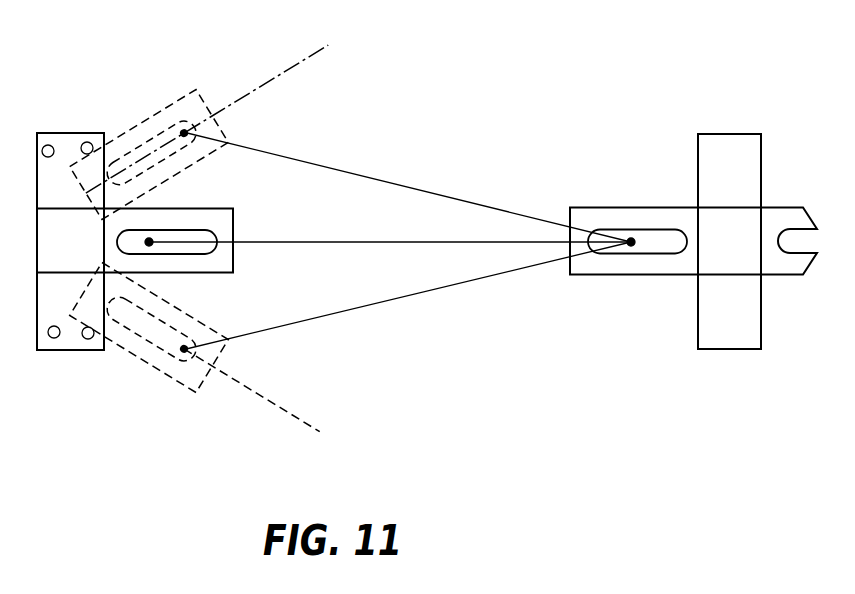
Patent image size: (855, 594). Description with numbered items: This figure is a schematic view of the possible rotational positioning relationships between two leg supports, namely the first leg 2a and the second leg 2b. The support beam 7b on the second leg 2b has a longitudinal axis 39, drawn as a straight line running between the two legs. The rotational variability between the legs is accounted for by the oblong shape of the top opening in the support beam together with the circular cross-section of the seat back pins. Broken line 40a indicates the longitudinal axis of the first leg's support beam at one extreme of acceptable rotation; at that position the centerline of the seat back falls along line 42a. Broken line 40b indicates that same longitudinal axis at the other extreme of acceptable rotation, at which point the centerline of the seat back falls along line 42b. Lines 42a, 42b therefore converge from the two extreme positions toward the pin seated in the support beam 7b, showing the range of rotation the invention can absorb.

The first leg 2a is at (67, 340).
The second leg 2b is at (725, 327).
The support beam 7b is at (665, 265).
The longitudinal axis 39 is at (403, 242).
The broken line 40a is at (255, 87).
The broken line 40b is at (231, 379).
The line 42a is at (433, 192).
The line 42b is at (362, 308).